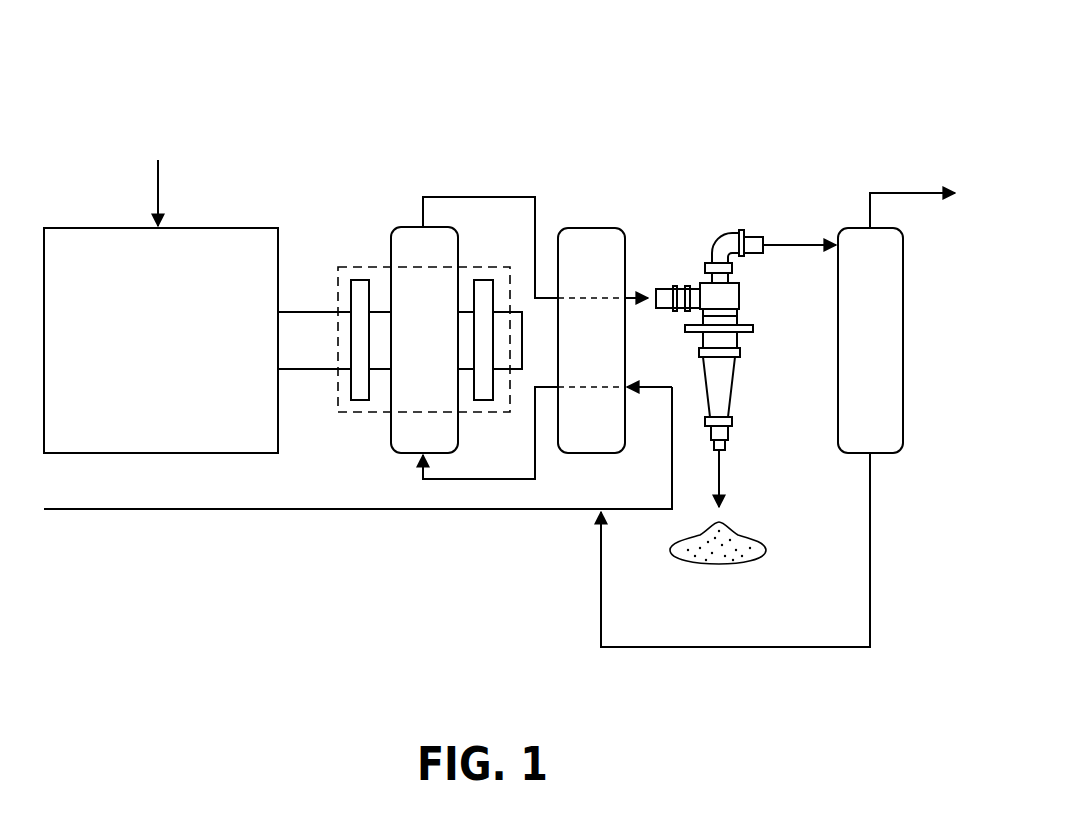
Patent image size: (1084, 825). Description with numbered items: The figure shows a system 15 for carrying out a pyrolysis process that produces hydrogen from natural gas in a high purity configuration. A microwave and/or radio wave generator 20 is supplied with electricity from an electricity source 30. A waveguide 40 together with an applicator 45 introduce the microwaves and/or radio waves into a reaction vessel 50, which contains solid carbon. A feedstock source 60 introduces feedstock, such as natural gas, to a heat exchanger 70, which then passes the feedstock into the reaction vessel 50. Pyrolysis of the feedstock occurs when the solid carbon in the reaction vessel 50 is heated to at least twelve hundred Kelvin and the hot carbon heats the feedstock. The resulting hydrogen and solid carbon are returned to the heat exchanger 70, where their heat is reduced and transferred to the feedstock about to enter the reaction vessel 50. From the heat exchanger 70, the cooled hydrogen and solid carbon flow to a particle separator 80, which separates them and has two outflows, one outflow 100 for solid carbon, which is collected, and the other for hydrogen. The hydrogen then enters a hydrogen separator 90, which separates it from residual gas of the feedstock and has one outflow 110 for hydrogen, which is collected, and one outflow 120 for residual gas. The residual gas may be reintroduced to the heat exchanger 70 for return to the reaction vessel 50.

The system 15 is at (742, 77).
The microwave and/or radio wave generator 20 is at (178, 357).
The electricity source 30 is at (154, 176).
The waveguide 40 is at (307, 311).
The applicator 45 is at (360, 265).
The reaction vessel 50 is at (440, 357).
The feedstock source 60 is at (310, 511).
The heat exchanger 70 is at (609, 357).
The particle separator 80 is at (740, 297).
The hydrogen separator 90 is at (889, 357).
The outflow for solid carbon 100 is at (720, 566).
The outflow for hydrogen 110 is at (912, 191).
The outflow for residual gas 120 is at (871, 540).